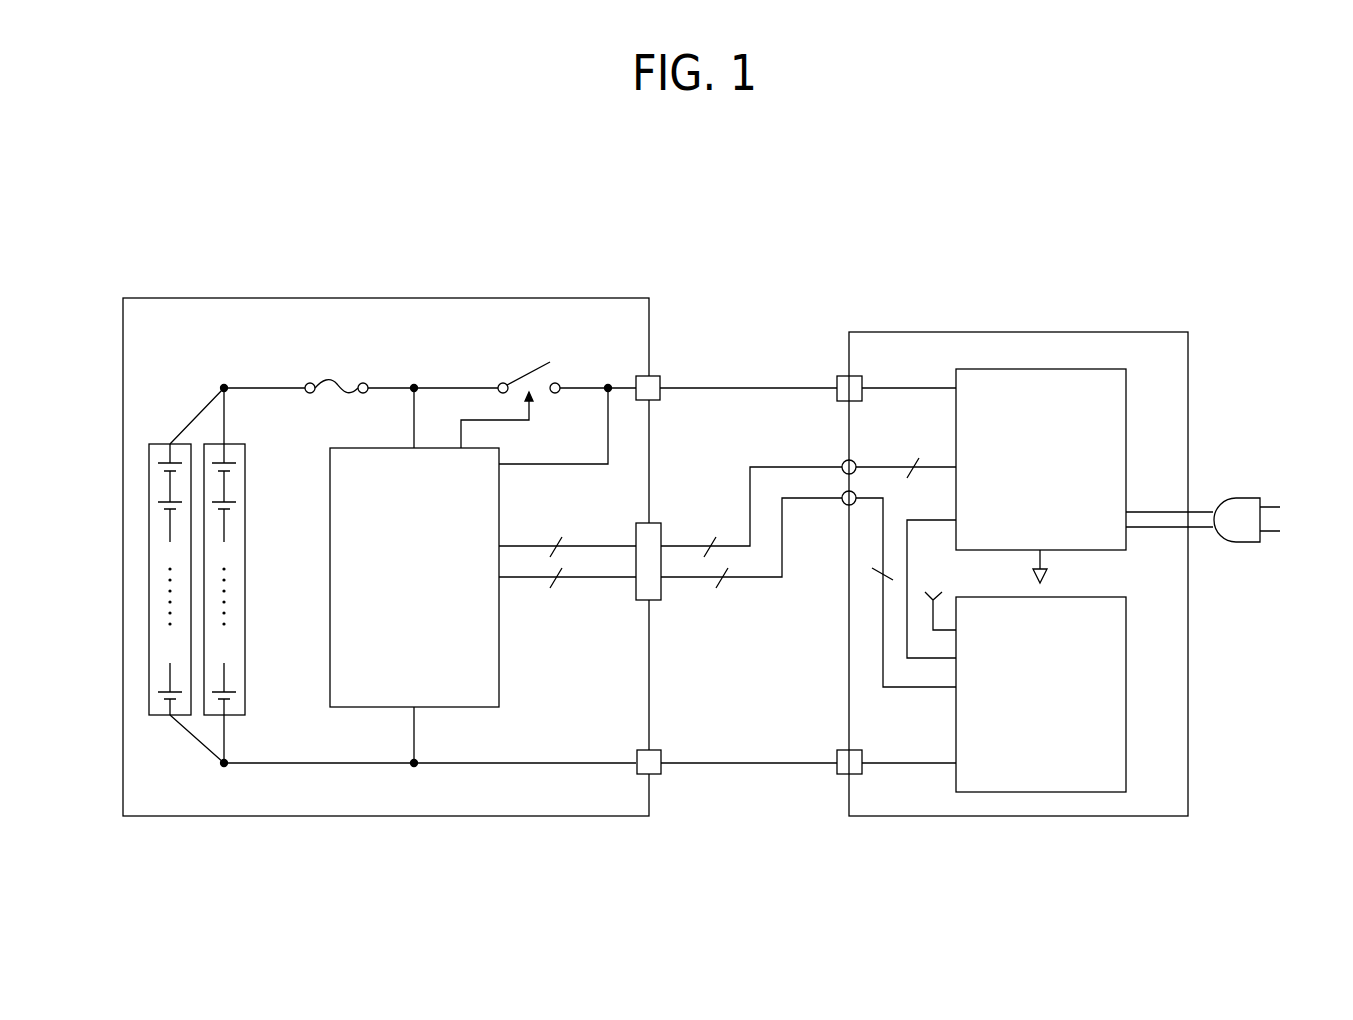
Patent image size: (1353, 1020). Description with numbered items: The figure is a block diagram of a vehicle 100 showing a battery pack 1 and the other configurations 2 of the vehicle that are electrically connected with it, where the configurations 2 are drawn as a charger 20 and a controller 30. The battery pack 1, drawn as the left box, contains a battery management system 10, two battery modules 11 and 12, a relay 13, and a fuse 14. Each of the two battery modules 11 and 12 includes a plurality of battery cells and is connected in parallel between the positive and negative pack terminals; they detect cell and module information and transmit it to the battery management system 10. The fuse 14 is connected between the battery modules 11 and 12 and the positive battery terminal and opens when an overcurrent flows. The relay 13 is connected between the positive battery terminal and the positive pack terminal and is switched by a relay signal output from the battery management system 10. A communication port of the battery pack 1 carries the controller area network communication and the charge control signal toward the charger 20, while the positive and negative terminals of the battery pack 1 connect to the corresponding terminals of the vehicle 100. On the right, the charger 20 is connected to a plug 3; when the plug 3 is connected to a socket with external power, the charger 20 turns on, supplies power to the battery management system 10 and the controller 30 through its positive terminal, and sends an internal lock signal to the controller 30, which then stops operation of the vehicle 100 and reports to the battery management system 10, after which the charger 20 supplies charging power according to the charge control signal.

The vehicle 100 is at (880, 242).
The battery pack 1 is at (430, 298).
The configurations of a vehicle 2 is at (1041, 332).
The plug 3 is at (1240, 498).
The battery management system (BMS) 10 is at (330, 686).
The battery module 11 is at (158, 444).
The battery module 12 is at (236, 444).
The relay 13 is at (557, 371).
The fuse 14 is at (323, 386).
The charger 20 is at (1126, 398).
The controller 30 is at (1126, 632).